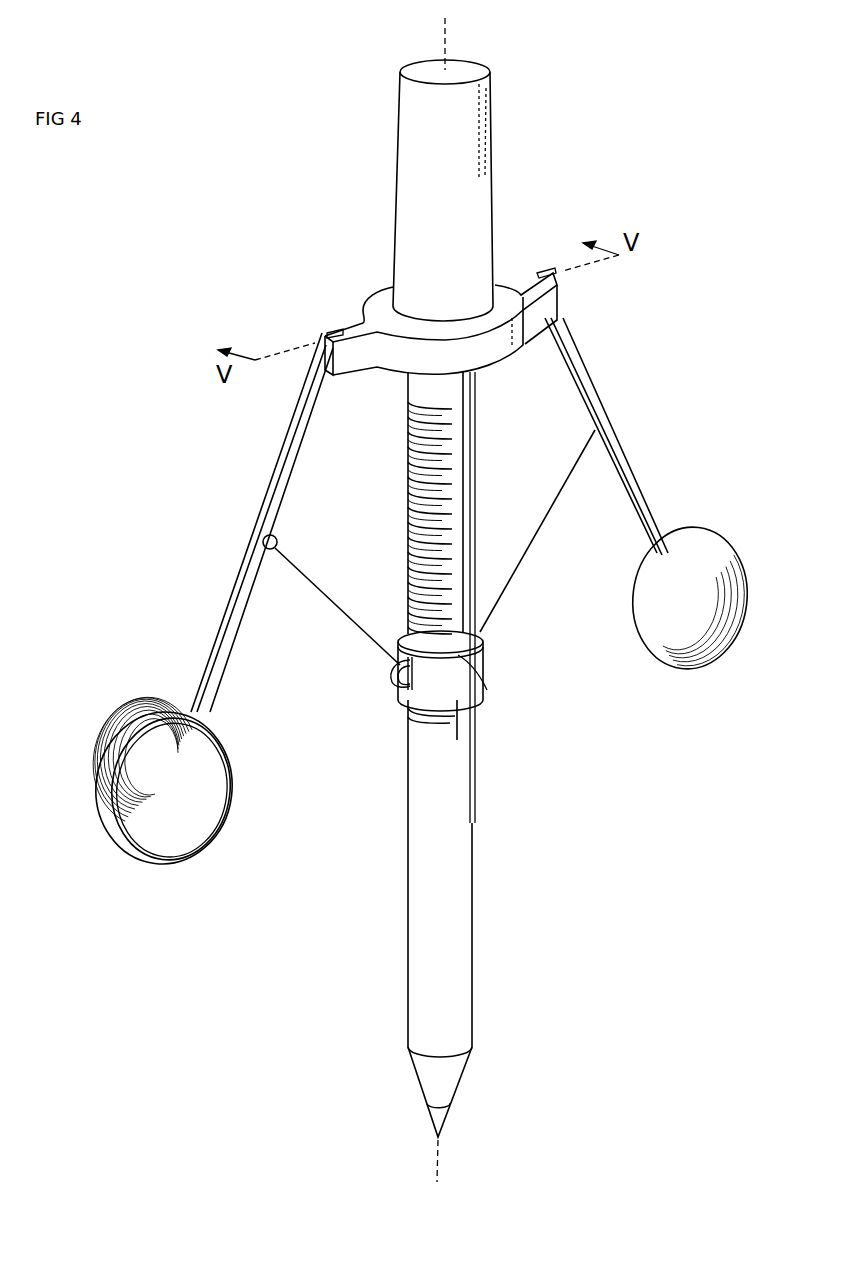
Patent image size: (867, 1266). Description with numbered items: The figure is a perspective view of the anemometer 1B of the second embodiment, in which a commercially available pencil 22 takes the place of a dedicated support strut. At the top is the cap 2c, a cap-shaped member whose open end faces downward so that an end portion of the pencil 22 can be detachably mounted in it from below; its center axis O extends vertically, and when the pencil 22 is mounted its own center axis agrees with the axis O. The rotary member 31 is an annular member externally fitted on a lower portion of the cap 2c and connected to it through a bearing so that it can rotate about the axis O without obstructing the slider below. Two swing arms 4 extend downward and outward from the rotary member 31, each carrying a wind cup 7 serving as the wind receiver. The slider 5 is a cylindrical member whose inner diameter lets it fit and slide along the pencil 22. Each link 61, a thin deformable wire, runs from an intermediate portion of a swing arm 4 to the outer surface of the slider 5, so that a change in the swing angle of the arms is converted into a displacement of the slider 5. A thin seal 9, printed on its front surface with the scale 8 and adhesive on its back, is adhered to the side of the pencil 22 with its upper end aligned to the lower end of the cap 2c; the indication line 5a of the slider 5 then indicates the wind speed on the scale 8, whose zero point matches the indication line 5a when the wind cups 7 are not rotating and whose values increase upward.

The anemometer 1B is at (553, 69).
The axis O is at (443, 50).
The cap 2c is at (481, 208).
The rotary member 31 is at (376, 304).
The swing arm 4 is at (300, 450).
The seal 9 is at (420, 385).
The scale 8 is at (412, 536).
The slider 5 is at (420, 683).
The indication line 5a is at (478, 686).
The link 61 is at (332, 604).
The wind cup 7 is at (127, 738).
The pencil 22 is at (453, 858).